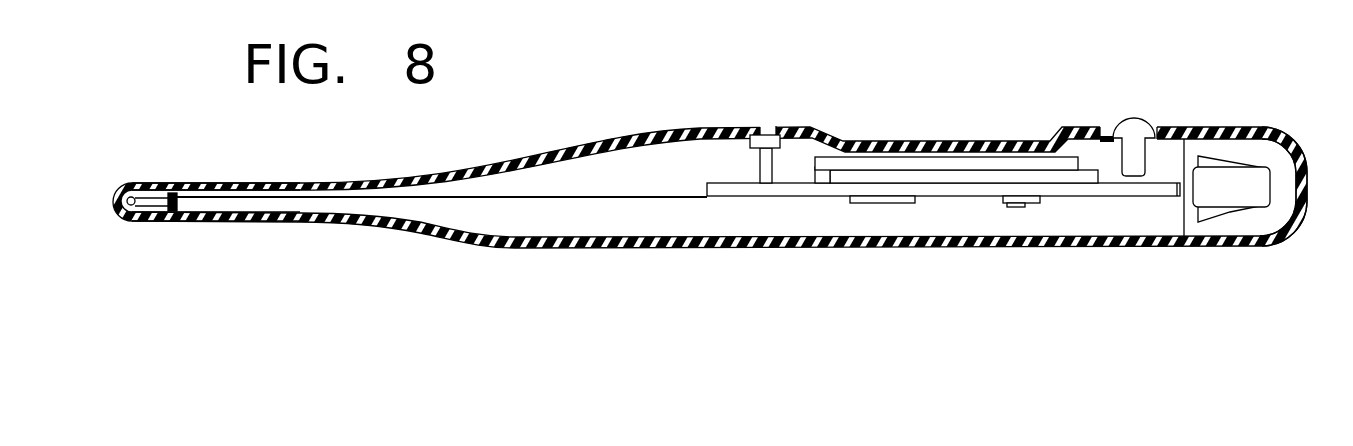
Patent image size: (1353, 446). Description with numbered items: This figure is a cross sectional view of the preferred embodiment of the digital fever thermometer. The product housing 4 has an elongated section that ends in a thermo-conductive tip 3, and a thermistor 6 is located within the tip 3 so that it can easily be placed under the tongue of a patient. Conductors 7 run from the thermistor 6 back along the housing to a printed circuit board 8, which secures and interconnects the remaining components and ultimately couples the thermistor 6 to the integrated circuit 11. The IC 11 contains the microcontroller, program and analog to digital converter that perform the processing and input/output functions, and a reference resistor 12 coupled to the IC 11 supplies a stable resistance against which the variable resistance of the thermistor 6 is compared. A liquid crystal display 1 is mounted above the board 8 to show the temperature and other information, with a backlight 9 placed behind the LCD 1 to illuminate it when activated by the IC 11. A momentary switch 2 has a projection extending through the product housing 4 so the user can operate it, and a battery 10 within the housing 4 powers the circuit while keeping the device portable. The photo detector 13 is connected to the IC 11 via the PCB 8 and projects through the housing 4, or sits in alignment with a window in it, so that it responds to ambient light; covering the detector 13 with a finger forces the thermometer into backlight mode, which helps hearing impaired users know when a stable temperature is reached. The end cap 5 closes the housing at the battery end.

The liquid crystal display 1 is at (928, 158).
The momentary switch 2 is at (1133, 119).
The thermo-conductive tip 3 is at (150, 183).
The product housing 4 is at (461, 244).
The housing end cap 5 is at (1276, 130).
The thermistor 6 is at (131, 206).
The conductors 7 is at (594, 198).
The printed circuit board 8 is at (808, 197).
The backlight 9 is at (962, 178).
The battery 10 is at (1259, 200).
The application specific integrated circuit 11 is at (883, 203).
The reference resistor 12 is at (1016, 207).
The photo detector 13 is at (767, 135).